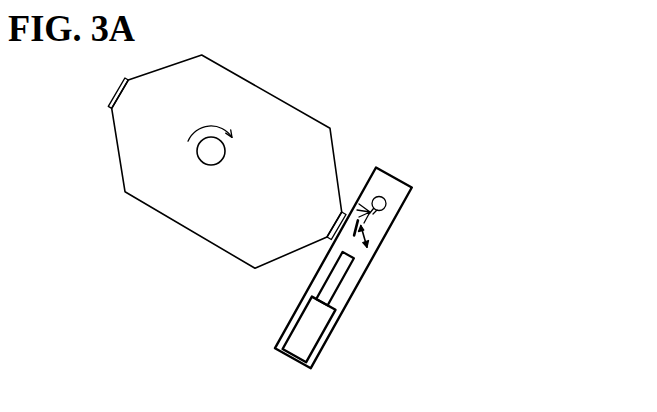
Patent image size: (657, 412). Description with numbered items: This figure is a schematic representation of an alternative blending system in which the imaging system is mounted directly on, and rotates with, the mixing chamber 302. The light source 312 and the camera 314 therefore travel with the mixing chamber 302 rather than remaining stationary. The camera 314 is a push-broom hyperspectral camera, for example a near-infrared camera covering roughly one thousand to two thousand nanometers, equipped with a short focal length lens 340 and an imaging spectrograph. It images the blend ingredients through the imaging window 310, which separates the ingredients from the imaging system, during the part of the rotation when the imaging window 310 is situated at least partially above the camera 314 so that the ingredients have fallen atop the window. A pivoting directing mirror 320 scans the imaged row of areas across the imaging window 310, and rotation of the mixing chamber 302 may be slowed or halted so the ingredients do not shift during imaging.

The mixing chamber 302 is at (265, 110).
The imaging window 310 is at (342, 213).
The light source 312 is at (388, 193).
The pivoting directing mirror 320 is at (364, 247).
The short focal length lens 340 is at (337, 282).
The camera 314 is at (320, 333).